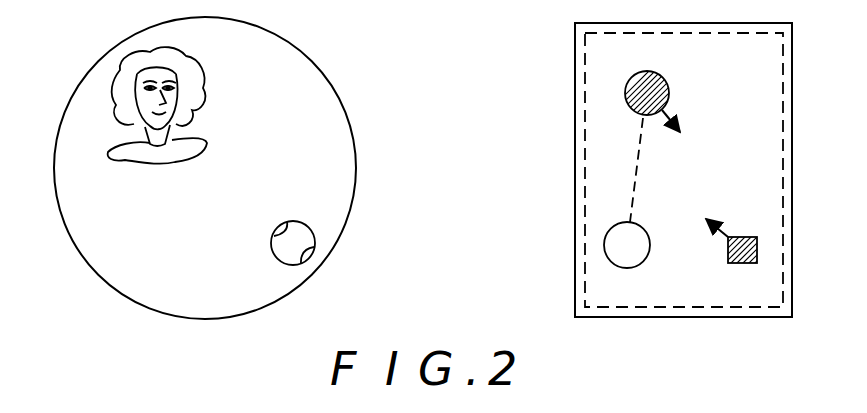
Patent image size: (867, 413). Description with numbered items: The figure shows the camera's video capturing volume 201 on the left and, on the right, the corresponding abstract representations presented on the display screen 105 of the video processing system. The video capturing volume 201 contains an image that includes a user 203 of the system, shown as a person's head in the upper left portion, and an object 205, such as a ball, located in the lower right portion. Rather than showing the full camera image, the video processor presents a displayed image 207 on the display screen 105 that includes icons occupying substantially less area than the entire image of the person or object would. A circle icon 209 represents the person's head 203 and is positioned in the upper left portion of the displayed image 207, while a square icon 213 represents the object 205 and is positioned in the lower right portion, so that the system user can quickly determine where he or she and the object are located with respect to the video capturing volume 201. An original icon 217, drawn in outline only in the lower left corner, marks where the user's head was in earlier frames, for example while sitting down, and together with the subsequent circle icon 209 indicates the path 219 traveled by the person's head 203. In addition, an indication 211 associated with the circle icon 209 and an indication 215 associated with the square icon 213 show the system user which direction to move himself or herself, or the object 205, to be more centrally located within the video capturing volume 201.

The display screen 105 is at (575, 82).
The video capturing volume 201 is at (357, 166).
The user 203 is at (205, 97).
The object 205 is at (272, 241).
The displayed image 207 is at (585, 147).
The circle icon 209 is at (660, 75).
The indication 211 is at (673, 110).
The square icon 213 is at (748, 237).
The indication 215 is at (715, 232).
The original icon 217 is at (632, 268).
The path 219 is at (637, 182).